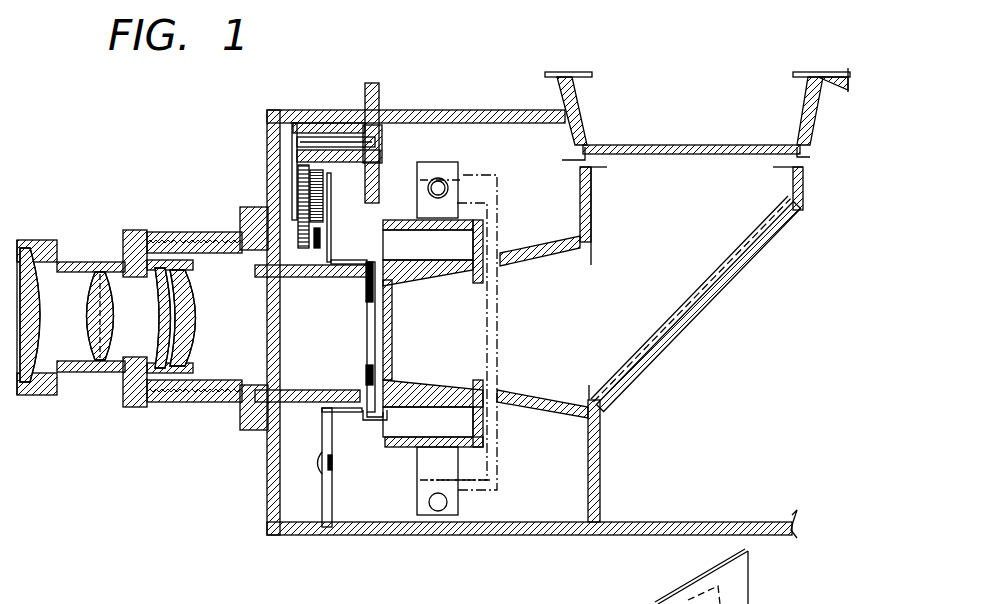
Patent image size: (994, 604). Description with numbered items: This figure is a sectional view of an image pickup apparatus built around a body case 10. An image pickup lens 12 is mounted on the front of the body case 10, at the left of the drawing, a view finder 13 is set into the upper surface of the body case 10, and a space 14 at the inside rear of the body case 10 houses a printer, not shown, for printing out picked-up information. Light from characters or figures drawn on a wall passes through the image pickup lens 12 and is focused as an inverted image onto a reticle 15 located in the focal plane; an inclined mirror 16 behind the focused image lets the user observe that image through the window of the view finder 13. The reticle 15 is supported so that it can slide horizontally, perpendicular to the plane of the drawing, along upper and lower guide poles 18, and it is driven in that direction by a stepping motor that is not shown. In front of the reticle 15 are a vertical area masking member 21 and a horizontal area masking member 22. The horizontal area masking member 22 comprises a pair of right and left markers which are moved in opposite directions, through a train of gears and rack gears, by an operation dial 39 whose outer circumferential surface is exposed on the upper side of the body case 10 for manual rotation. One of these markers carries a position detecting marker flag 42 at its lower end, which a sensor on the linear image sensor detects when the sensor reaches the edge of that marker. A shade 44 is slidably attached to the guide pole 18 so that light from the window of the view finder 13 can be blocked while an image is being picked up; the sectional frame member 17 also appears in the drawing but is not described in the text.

The body case 10 is at (315, 110).
The image pickup lens 12 is at (115, 265).
The view finder 13 is at (666, 145).
The space 14 is at (745, 396).
The reticle 15 is at (393, 309).
The inclined mirror 16 is at (716, 274).
The sensor mount frame 17 is at (473, 265).
The guide poles 18 is at (442, 183).
The vertical area masking member 21 is at (367, 292).
The horizontal area masking member 22 is at (312, 287).
The operation dial 39 is at (370, 84).
The position detecting marker flag 42 is at (372, 422).
The shade 44 is at (499, 342).